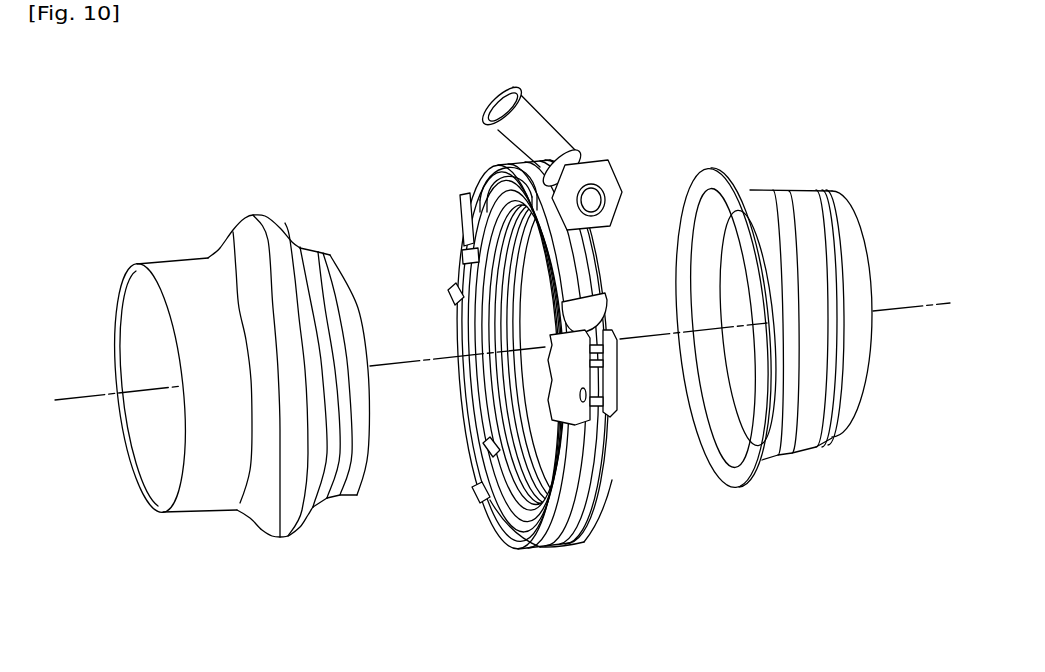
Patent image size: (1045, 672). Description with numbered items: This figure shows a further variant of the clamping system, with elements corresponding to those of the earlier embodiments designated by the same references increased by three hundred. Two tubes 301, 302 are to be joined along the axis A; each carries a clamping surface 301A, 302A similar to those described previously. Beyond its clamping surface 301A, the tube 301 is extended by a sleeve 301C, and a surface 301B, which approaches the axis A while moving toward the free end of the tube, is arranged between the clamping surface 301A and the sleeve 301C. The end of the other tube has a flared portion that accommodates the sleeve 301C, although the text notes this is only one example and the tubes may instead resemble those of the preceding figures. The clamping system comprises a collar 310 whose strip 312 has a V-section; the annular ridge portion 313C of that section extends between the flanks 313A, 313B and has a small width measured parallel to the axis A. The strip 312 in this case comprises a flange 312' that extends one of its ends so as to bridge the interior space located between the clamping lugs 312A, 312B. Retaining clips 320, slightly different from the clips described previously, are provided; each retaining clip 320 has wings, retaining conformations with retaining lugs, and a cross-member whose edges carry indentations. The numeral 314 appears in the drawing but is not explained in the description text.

The axis A is at (67, 397).
The tube 301 is at (241, 354).
The clamping surface 301A is at (232, 236).
The surface 301B is at (302, 245).
The sleeve 301C is at (325, 250).
The tube 302 is at (768, 301).
The clamping surface 302A is at (735, 187).
The collar 310 is at (531, 318).
The strip 312 is at (503, 355).
The flange 312' is at (473, 167).
The clamping lug 312A is at (513, 95).
The clamping lug 312B is at (572, 150).
The flank 313A is at (538, 542).
The flank 313B is at (600, 482).
The annular ridge portion 313C is at (570, 537).
The latch 314 is at (480, 452).
The retaining clip 320 is at (433, 275).